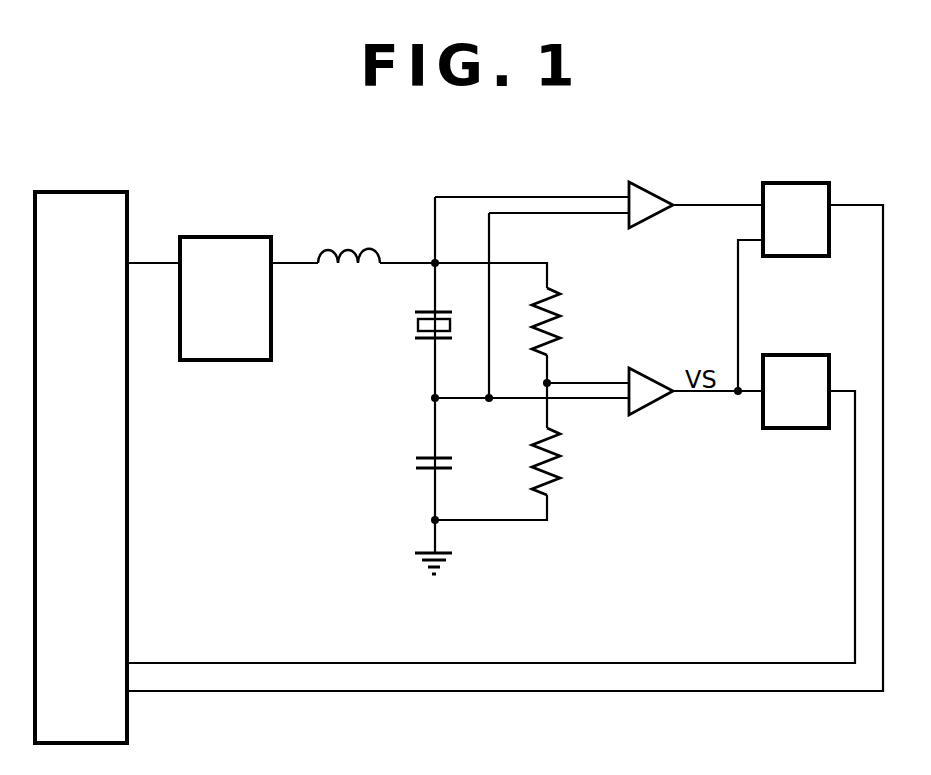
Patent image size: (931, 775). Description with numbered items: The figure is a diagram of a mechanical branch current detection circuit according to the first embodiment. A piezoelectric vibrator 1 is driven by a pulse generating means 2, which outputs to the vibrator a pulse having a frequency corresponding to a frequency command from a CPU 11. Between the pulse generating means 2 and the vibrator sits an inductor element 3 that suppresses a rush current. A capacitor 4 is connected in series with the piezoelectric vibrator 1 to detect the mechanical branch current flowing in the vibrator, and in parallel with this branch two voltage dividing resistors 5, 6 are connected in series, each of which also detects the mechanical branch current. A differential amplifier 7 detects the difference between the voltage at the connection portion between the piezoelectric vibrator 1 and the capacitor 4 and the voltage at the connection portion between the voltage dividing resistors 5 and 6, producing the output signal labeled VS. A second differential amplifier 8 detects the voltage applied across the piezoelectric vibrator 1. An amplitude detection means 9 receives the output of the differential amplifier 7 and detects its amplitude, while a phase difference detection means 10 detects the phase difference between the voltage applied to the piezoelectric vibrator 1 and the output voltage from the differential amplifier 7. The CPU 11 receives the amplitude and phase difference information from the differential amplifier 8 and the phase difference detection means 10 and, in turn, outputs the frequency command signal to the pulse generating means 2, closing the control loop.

The piezoelectric vibrator 1 is at (412, 319).
The pulse generating means 2 is at (248, 237).
The inductor element 3 is at (320, 240).
The capacitor 4 is at (414, 463).
The voltage dividing resistor 5 is at (560, 316).
The voltage dividing resistor 6 is at (562, 458).
The differential amplifier 7 is at (638, 374).
The differential amplifier 8 is at (638, 188).
The amplitude detection means 9 is at (812, 428).
The phase difference detection means 10 is at (809, 183).
The CPU 11 is at (102, 192).